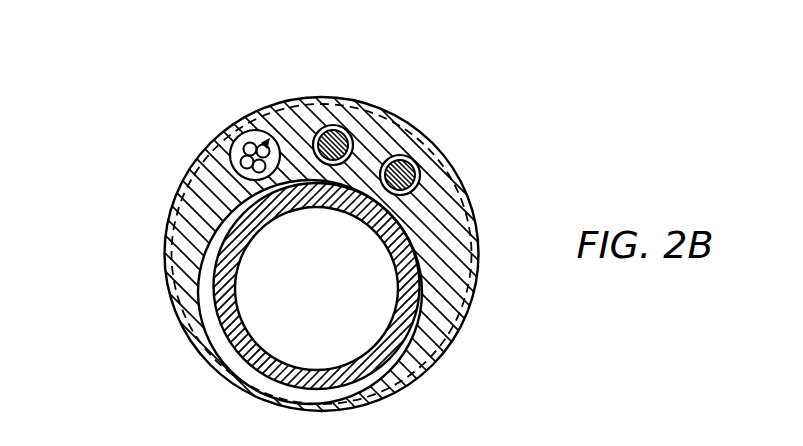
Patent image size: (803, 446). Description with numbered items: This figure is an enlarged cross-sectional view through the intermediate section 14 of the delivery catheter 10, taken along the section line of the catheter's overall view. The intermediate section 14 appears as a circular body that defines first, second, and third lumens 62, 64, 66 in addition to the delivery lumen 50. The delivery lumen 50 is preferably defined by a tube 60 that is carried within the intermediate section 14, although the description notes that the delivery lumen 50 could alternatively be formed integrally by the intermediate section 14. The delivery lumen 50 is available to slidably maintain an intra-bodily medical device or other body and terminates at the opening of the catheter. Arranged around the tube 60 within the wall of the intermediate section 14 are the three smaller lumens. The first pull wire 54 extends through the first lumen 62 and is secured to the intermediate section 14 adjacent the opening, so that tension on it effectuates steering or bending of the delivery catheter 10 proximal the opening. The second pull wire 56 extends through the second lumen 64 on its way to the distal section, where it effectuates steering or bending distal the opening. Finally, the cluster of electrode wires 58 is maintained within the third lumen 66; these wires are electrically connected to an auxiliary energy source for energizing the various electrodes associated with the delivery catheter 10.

The delivery catheter 10 is at (308, 229).
The intermediate section 14 is at (400, 390).
The delivery lumen 50 is at (392, 335).
The first pull wire 54 is at (398, 155).
The second pull wire 56 is at (318, 126).
The cluster of electrode wires 58 is at (248, 145).
The tube 60 is at (215, 295).
The first lumen 62 is at (420, 172).
The second lumen 64 is at (350, 133).
The third lumen 66 is at (233, 172).